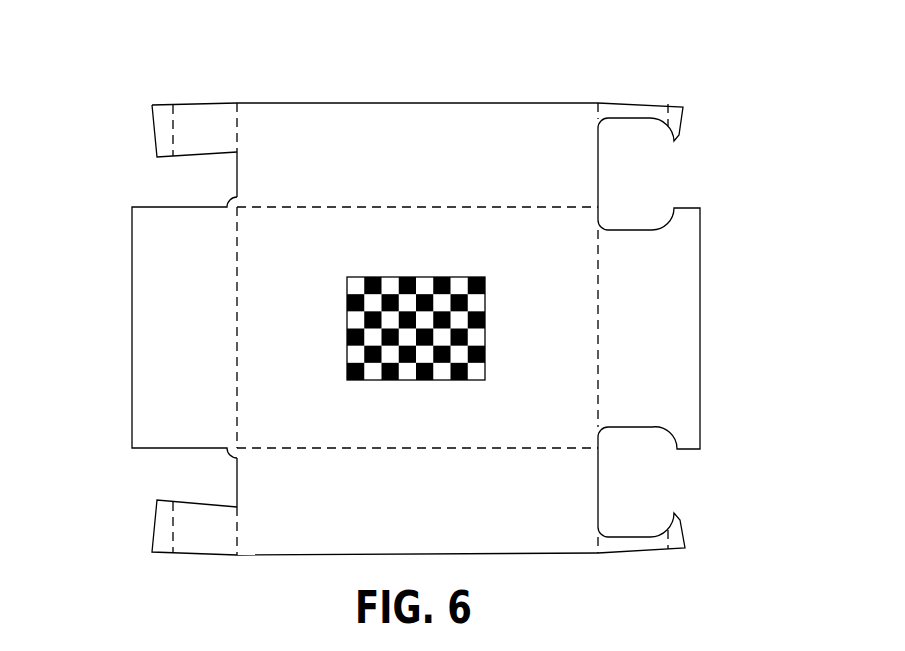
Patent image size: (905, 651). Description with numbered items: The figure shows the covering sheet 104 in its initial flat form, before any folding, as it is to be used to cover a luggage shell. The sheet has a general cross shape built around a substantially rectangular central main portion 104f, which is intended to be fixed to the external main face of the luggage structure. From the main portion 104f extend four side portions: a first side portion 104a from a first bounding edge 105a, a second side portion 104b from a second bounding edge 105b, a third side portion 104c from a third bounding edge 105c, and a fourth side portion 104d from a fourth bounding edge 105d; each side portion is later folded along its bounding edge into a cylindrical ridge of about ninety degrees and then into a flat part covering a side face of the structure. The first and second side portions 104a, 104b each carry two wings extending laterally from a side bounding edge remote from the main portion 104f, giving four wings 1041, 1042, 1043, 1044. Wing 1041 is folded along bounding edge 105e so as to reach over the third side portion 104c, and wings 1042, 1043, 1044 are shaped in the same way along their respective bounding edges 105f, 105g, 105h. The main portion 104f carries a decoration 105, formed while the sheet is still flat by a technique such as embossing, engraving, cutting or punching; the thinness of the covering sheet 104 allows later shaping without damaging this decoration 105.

The covering sheet 104 is at (748, 110).
The wing 1041 is at (680, 95).
The wing 1042 is at (158, 95).
The wing 1043 is at (143, 557).
The wing 1044 is at (687, 555).
The first side portion 104a is at (421, 126).
The second side portion 104b is at (427, 532).
The third side portion 104c is at (662, 327).
The fourth side portion 104d is at (168, 373).
The main portion 104f is at (418, 324).
The decoration 105 is at (495, 304).
The first bounding edge 105a is at (352, 206).
The second bounding edge 105b is at (333, 452).
The third bounding edge 105c is at (600, 343).
The fourth bounding edge 105d is at (237, 322).
The bounding edge 105e is at (600, 113).
The bounding edge 105f is at (235, 108).
The bounding edge 105g is at (239, 538).
The bounding edge 105h is at (600, 546).